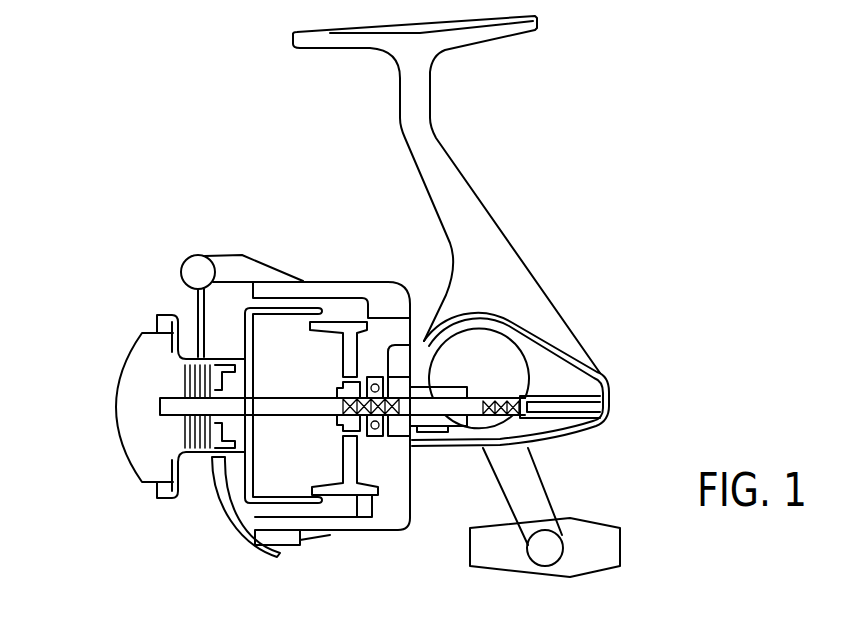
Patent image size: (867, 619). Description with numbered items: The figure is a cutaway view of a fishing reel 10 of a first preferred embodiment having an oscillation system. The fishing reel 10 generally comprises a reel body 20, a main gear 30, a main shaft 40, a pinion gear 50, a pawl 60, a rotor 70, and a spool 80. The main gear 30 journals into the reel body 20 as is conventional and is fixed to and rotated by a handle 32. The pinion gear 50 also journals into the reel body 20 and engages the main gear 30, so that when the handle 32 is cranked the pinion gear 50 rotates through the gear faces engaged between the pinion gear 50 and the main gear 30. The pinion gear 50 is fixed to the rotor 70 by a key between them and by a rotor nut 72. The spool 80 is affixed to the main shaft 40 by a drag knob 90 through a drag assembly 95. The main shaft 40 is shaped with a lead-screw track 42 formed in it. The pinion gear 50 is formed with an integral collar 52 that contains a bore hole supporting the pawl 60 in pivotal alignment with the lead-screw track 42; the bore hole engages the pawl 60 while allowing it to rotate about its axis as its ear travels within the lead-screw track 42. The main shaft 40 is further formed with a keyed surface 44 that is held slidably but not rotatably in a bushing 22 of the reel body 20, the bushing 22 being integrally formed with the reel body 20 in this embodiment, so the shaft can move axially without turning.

The fishing reel 10 is at (529, 229).
The reel body 20 is at (527, 286).
The bushing 22 is at (564, 398).
The main gear 30 is at (520, 338).
The handle 32 is at (538, 500).
The main shaft 40 is at (465, 407).
The lead-screw track 42 is at (343, 418).
The keyed surface 44 is at (523, 418).
The pinion gear 50 is at (448, 397).
The collar 52 is at (398, 428).
The pawl 60 is at (398, 382).
The rotor 70 is at (317, 293).
The rotor nut 72 is at (337, 386).
The spool 80 is at (223, 456).
The drag knob 90 is at (140, 368).
The drag assembly 95 is at (193, 428).